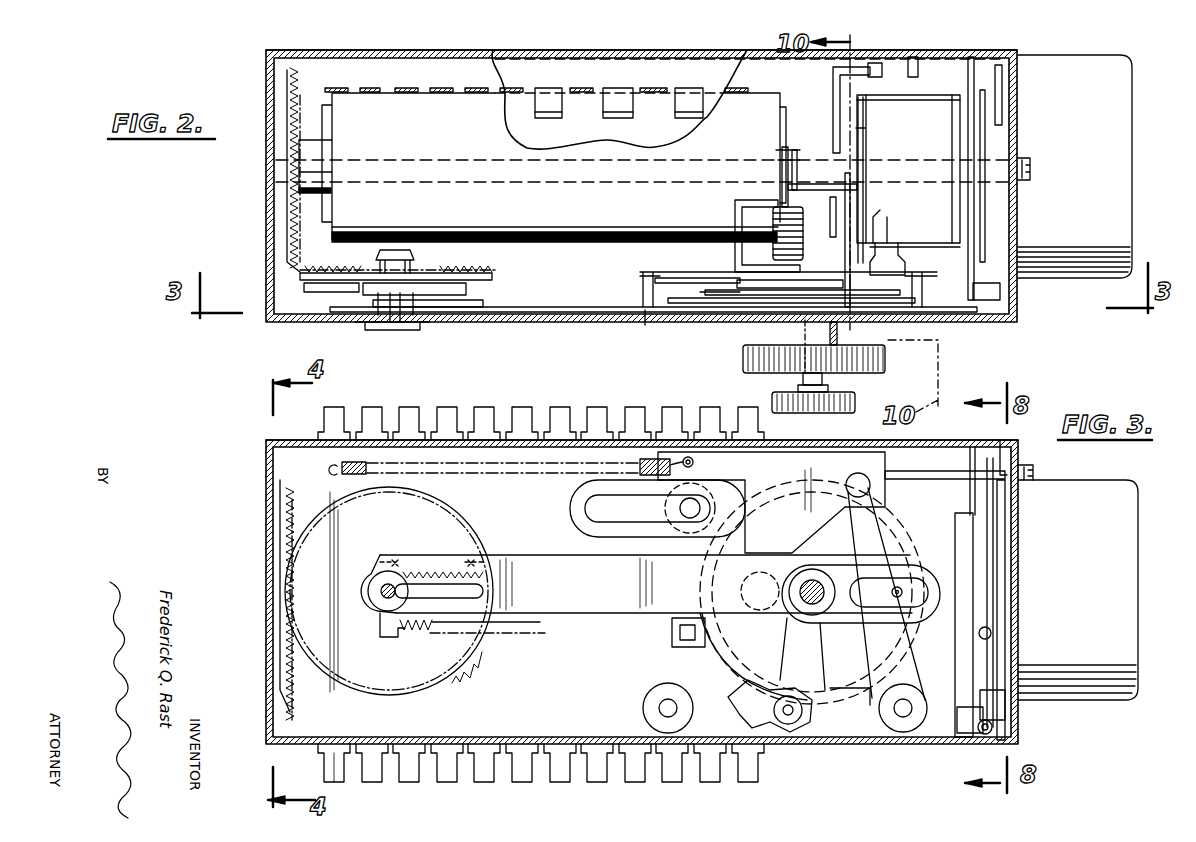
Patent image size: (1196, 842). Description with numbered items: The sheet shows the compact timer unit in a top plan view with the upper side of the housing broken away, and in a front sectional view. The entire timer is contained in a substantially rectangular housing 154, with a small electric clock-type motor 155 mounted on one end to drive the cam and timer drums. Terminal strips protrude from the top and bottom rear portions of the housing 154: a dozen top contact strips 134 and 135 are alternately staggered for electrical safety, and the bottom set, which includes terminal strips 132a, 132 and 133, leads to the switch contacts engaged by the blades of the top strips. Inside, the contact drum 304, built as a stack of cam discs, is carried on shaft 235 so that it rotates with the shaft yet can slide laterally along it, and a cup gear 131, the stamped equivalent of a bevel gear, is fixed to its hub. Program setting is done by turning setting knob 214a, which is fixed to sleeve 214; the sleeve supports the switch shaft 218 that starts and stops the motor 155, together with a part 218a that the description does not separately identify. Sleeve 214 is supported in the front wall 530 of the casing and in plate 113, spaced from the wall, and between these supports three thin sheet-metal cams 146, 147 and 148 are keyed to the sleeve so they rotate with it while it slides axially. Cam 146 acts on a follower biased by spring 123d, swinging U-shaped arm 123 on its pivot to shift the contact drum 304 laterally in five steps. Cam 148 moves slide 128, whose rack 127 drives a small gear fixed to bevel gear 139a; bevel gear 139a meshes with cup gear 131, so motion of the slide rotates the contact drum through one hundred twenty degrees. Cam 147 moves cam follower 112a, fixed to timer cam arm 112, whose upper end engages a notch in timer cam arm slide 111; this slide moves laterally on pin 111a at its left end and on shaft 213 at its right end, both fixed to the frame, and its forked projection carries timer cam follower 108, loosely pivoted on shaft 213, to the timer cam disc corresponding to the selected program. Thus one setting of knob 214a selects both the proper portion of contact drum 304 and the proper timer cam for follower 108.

In FIG. 2, the housing 154 is at (265, 120).
In FIG. 3, the housing 154 is at (276, 446).
In FIG. 2, the top contact strip 135 is at (348, 86).
In FIG. 3, the top contact strip 135 is at (330, 415).
In FIG. 2, the top contact strip 134 is at (367, 86).
In FIG. 3, the top contact strip 134 is at (370, 415).
In FIG. 2, the timer cam follower 108 is at (862, 152).
In FIG. 2, the electric clock-type motor 155 is at (1100, 160).
In FIG. 3, the electric clock-type motor 155 is at (1125, 553).
In FIG. 2, the cup gear 131 is at (286, 237).
In FIG. 3, the cup gear 131 is at (283, 560).
In FIG. 2, the shaft 235 is at (608, 182).
In FIG. 2, the U-shaped arm 123 is at (735, 215).
In FIG. 2, the spring 123d is at (778, 243).
In FIG. 2, the cam 146 is at (903, 270).
In FIG. 2, the bevel gear 139a is at (493, 271).
In FIG. 3, the bevel gear 139a is at (480, 652).
In FIG. 2, the contact drum 304 is at (560, 243).
In FIG. 2, the plate 113 is at (655, 272).
In FIG. 2, the timer cam arm slide 111 is at (677, 284).
In FIG. 2, the shaft 213 is at (925, 268).
In FIG. 3, the shaft 213 is at (905, 480).
In FIG. 2, the cam 148 is at (900, 307).
In FIG. 2, the front plate or wall 530 is at (656, 312).
In FIG. 2, the cam 147 is at (737, 292).
In FIG. 2, the sleeve 214 is at (840, 332).
In FIG. 2, the setting knob 214a is at (870, 358).
In FIG. 2, the switch shaft 218 is at (828, 386).
In FIG. 2, the gear 218a is at (858, 402).
In FIG. 3, the rack 127 is at (490, 552).
In FIG. 3, the slide 128 is at (560, 552).
In FIG. 3, the pin 111a is at (680, 509).
In FIG. 3, the cam follower 112a is at (900, 580).
In FIG. 3, the timer cam arm 112 is at (898, 655).
In FIG. 3, the terminal strip 132a is at (322, 774).
In FIG. 3, the terminal strip 132 is at (340, 775).
In FIG. 3, the terminal strip 133 is at (370, 770).